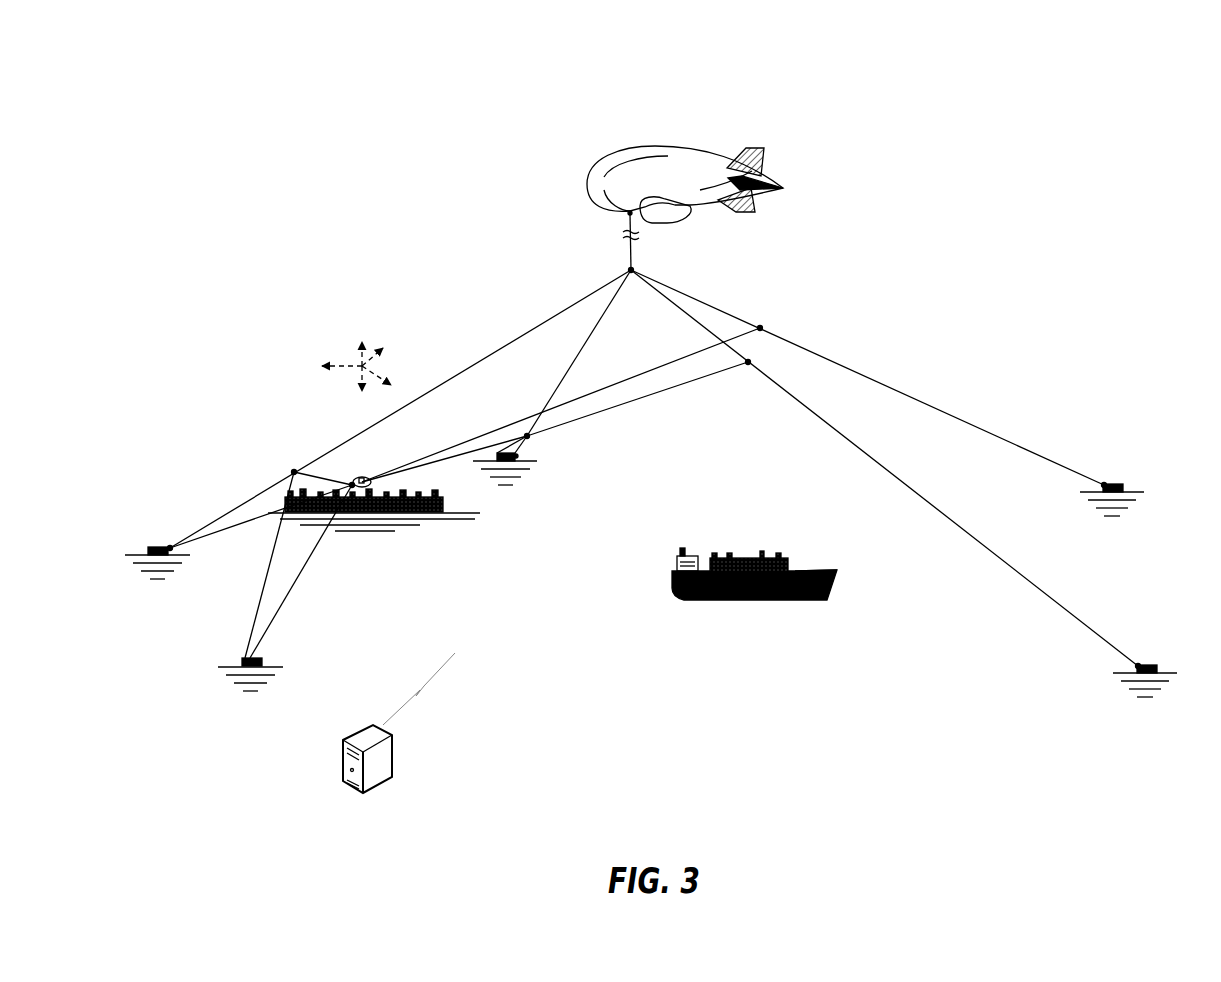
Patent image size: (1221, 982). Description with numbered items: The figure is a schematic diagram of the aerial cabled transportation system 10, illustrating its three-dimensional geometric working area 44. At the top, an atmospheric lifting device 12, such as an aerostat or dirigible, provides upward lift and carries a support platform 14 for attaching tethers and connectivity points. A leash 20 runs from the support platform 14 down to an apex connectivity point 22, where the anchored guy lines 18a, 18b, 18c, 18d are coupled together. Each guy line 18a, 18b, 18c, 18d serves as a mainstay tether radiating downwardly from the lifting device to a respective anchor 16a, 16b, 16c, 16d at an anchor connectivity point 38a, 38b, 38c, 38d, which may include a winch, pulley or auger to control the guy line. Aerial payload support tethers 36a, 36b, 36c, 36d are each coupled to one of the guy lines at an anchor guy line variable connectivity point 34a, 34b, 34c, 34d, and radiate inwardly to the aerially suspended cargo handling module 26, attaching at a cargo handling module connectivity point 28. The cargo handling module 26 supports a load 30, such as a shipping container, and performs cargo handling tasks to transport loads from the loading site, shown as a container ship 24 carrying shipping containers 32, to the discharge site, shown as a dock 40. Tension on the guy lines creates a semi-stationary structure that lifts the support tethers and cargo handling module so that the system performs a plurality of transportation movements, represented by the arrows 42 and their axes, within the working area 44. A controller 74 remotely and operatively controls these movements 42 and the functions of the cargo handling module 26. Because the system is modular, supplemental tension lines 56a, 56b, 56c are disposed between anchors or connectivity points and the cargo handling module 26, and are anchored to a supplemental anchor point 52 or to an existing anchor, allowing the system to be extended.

The aerial cabled transportation system 10 is at (315, 122).
The atmospheric lifting device 12 is at (626, 154).
The support platform 14 is at (628, 214).
The leash 20 is at (634, 251).
The apex connectivity point 22 is at (628, 270).
The geometric three-dimensional working area 44 is at (532, 343).
The arrows representing movements 42 is at (345, 366).
The anchored guy line 18a is at (212, 520).
The anchored guy line 18b is at (530, 408).
The anchored guy line 18c is at (1047, 456).
The anchored guy line 18d is at (1100, 640).
The anchor guy line variable connectivity point 34a is at (293, 471).
The anchor guy line variable connectivity point 34b is at (526, 434).
The anchor guy line variable connectivity point 34c is at (762, 326).
The anchor guy line variable connectivity point 34d is at (750, 362).
The aerial payload support tether 36a is at (312, 468).
The aerial payload support tether 36b is at (425, 462).
The aerial payload support tether 36c is at (690, 348).
The aerial payload support tether 36d is at (718, 372).
The cargo handling module connectivity point 28 is at (351, 484).
The aerially suspended cargo handling module 26 is at (368, 480).
The load 30 is at (360, 477).
The dock 40 is at (446, 506).
The anchor 16a is at (150, 546).
The anchor 16b is at (499, 452).
The anchor 16c is at (1124, 485).
The anchor 16d is at (1157, 665).
The anchor connectivity point 38a is at (175, 551).
The anchor connectivity point 38b is at (519, 457).
The anchor connectivity point 38c is at (1106, 483).
The anchor connectivity point 38d is at (1135, 668).
The supplemental tension line 56a is at (226, 527).
The supplemental tension line 56b is at (298, 595).
The supplemental tension line 56c is at (250, 628).
The supplemental anchor point 52 is at (266, 664).
The controller 74 is at (353, 742).
The shipping containers 32 is at (788, 558).
The container ship 24 is at (828, 573).